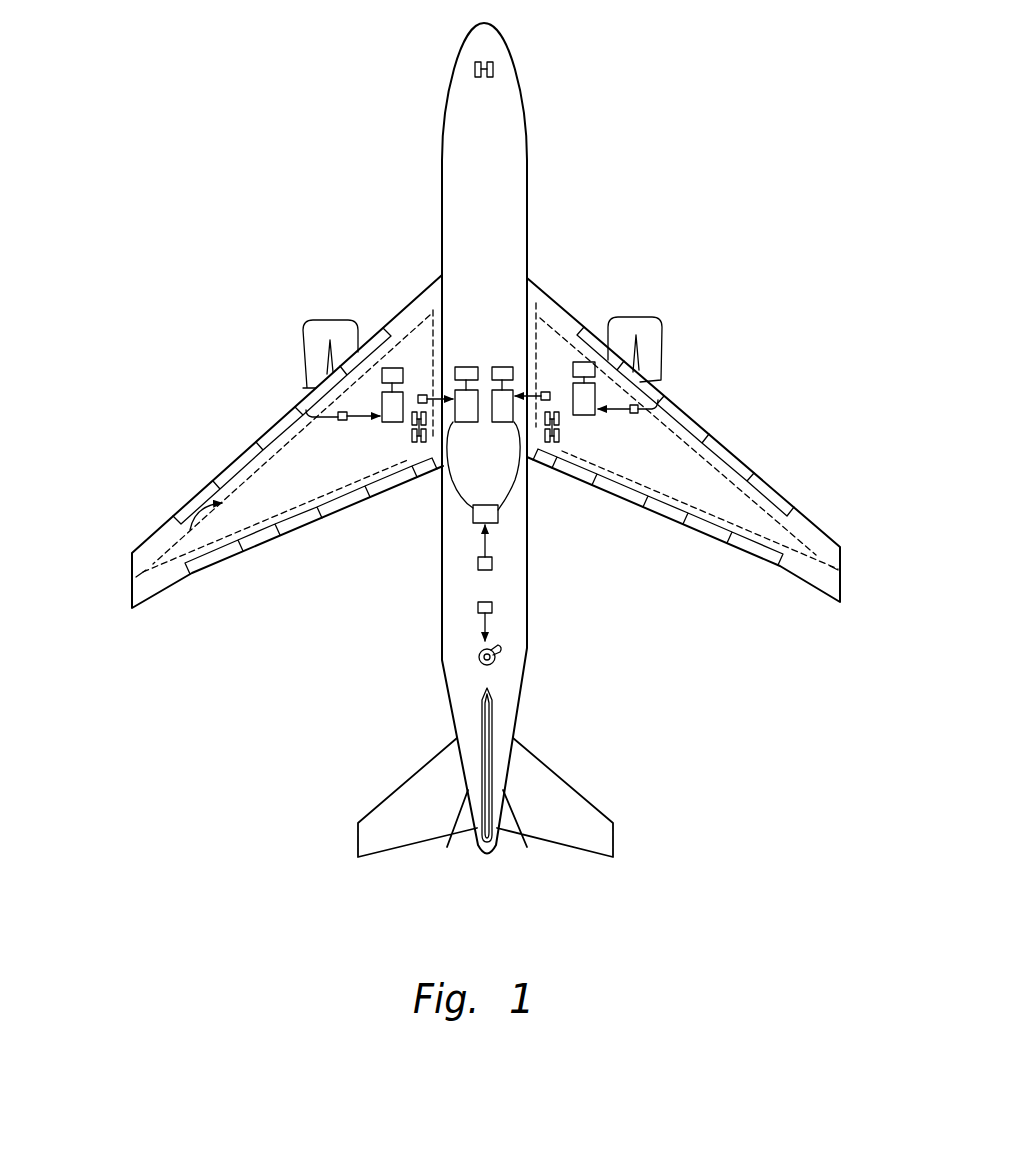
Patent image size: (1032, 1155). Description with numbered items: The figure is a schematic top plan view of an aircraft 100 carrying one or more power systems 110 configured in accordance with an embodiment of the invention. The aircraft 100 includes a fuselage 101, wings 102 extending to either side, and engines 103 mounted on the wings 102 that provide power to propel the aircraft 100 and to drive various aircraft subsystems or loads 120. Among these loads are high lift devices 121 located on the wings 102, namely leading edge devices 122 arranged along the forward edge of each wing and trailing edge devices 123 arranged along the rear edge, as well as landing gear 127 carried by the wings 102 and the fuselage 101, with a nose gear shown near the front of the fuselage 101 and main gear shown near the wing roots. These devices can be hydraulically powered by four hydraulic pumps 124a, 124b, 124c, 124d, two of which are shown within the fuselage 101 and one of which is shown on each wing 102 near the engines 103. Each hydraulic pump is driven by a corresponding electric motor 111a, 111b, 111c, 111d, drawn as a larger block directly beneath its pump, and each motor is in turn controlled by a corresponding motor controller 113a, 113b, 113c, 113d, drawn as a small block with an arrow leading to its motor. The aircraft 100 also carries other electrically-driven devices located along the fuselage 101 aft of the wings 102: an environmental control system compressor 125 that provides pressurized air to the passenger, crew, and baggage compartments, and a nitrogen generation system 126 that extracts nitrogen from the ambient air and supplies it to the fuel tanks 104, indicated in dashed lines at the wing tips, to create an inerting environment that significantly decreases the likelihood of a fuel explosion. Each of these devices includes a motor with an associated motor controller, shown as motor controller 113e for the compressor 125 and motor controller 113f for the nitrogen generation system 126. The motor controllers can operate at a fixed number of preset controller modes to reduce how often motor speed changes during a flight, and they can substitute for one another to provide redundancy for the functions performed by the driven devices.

The aircraft 100 is at (608, 173).
The fuselage 101 is at (441, 152).
The wings 102 is at (191, 585).
The engines 103 is at (302, 328).
The fuel tanks 104 is at (140, 573).
The power systems 110 is at (544, 366).
The aircraft subsystems or loads 120 is at (606, 293).
The high lift devices 121 is at (207, 543).
The leading edge devices 122 is at (203, 488).
The trailing edge devices 123 is at (328, 530).
The hydraulic pump 124a is at (392, 366).
The hydraulic pump 124b is at (566, 378).
The hydraulic pump 124c is at (466, 365).
The hydraulic pump 124d is at (503, 365).
The electric motor 111a is at (390, 425).
The electric motor 111b is at (590, 418).
The electric motor 111c is at (453, 480).
The electric motor 111d is at (517, 482).
The motor controller 113a is at (338, 415).
The motor controller 113b is at (640, 407).
The motor controller 113c is at (417, 398).
The motor controller 113d is at (540, 392).
The motor controller 113e is at (492, 608).
The motor controller 113f is at (478, 563).
The environmental control system compressor 125 is at (478, 660).
The nitrogen generation system 126 is at (497, 523).
The landing gear 127 is at (493, 69).